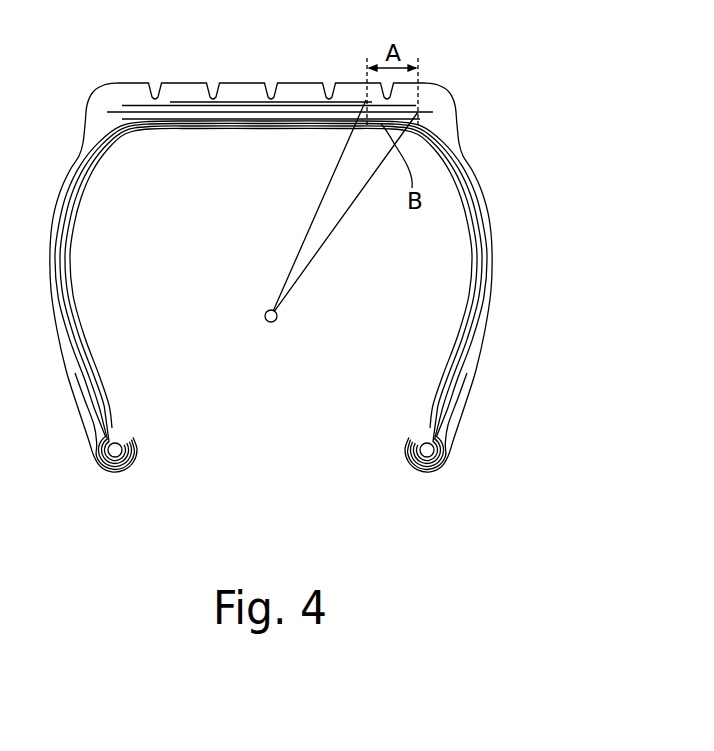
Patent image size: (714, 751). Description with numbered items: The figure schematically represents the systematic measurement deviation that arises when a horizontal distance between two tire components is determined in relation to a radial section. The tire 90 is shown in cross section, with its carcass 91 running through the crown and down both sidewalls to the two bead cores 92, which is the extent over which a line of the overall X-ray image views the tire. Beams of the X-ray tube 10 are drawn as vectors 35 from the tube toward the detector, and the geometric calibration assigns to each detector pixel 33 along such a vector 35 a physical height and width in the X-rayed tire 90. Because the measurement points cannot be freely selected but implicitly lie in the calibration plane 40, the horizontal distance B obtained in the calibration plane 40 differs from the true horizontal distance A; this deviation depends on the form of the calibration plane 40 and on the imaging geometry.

The X-ray tube 10 is at (271, 323).
The pixel 33 is at (364, 118).
The vector 35 is at (313, 232).
The calibration plane 40 is at (455, 140).
The tire 90 is at (474, 337).
The carcass 91 is at (468, 168).
The bead core 92 is at (114, 457).